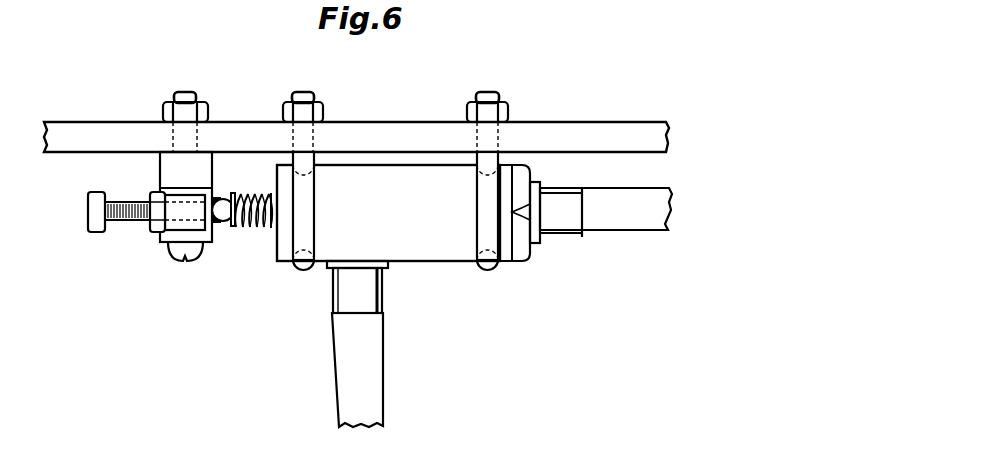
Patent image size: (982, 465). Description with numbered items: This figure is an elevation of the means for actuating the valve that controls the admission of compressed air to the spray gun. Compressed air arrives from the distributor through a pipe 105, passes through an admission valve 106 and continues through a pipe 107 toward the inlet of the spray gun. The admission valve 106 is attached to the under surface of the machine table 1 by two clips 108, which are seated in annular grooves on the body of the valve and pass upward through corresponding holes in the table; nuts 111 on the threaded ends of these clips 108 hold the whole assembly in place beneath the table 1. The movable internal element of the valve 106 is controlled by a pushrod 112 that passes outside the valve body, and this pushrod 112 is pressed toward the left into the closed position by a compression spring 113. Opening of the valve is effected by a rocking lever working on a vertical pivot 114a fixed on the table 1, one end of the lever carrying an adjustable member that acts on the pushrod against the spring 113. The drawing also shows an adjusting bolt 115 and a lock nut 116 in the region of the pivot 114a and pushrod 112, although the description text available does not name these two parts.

The machine table 1 is at (543, 132).
The pipe 105 is at (643, 225).
The admission valve 106 is at (438, 248).
The pipe 107 is at (355, 362).
The clips 108 is at (305, 265).
The nuts 111 is at (302, 110).
The pushrod 112 is at (218, 208).
The compression spring 113 is at (253, 225).
The vertical pivot 114a is at (173, 165).
The adjusting bolt 115 is at (100, 227).
The lock nut 116 is at (157, 227).